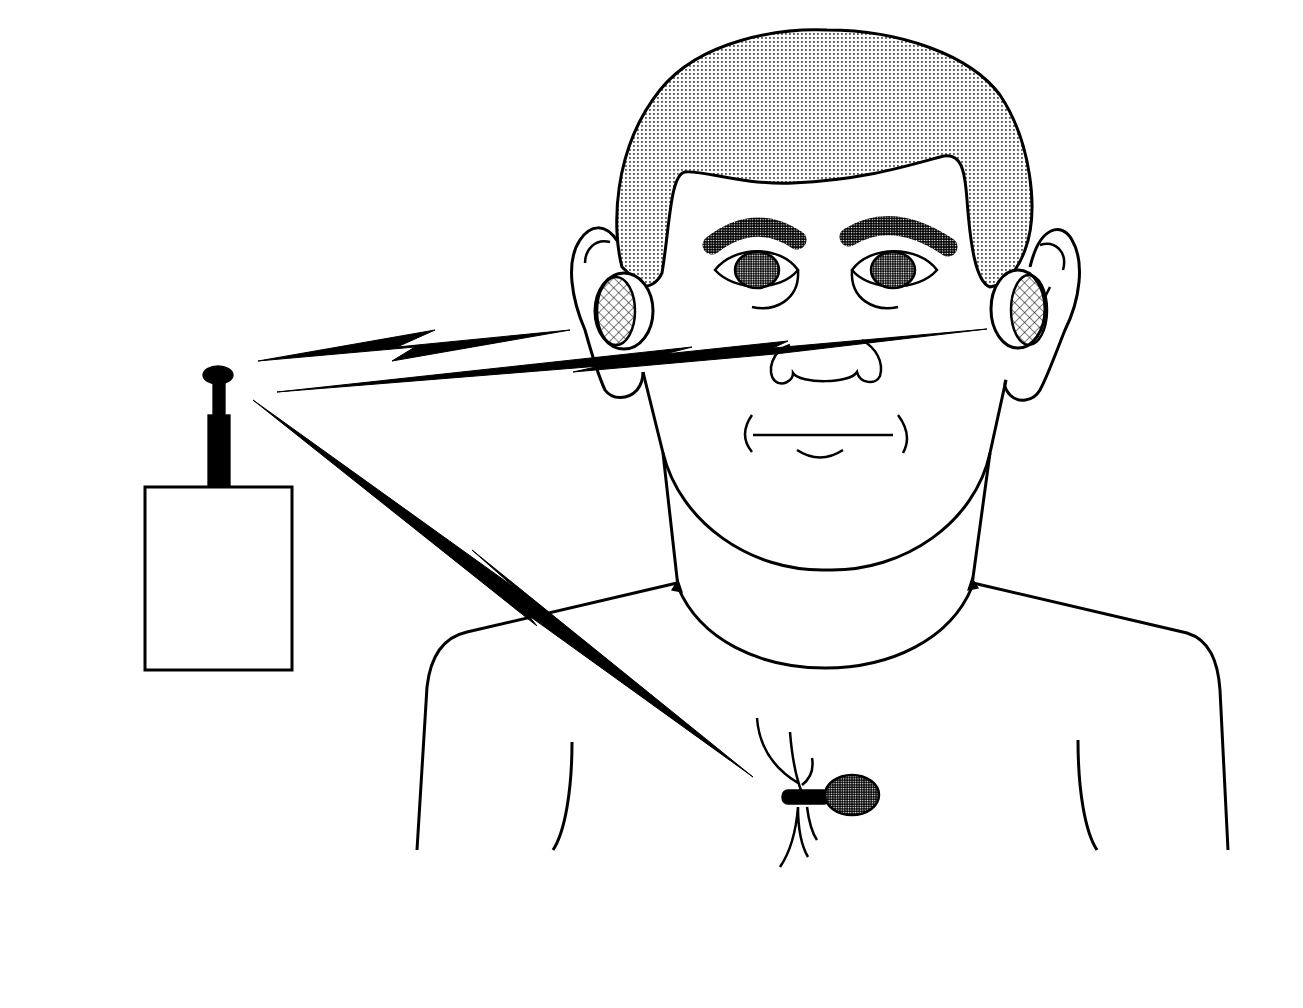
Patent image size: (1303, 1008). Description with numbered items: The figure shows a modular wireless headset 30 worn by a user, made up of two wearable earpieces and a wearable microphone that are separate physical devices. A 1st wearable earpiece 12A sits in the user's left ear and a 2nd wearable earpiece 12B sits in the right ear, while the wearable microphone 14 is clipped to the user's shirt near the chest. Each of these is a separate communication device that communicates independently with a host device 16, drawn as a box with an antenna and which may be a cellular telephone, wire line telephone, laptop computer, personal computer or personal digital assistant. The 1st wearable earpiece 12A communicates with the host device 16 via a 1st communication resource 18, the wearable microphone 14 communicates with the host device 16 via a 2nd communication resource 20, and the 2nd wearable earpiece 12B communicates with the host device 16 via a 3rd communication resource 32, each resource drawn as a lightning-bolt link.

The 1st wearable earpiece 12A is at (559, 307).
The 2nd wearable earpiece 12B is at (1074, 325).
The wearable microphone 14 is at (889, 813).
The host device 16 is at (218, 518).
The 1st communication resource 18 is at (396, 321).
The 2nd communication resource 20 is at (503, 588).
The modular wireless headset 30 is at (723, 546).
The 3rd communication resource 32 is at (632, 384).